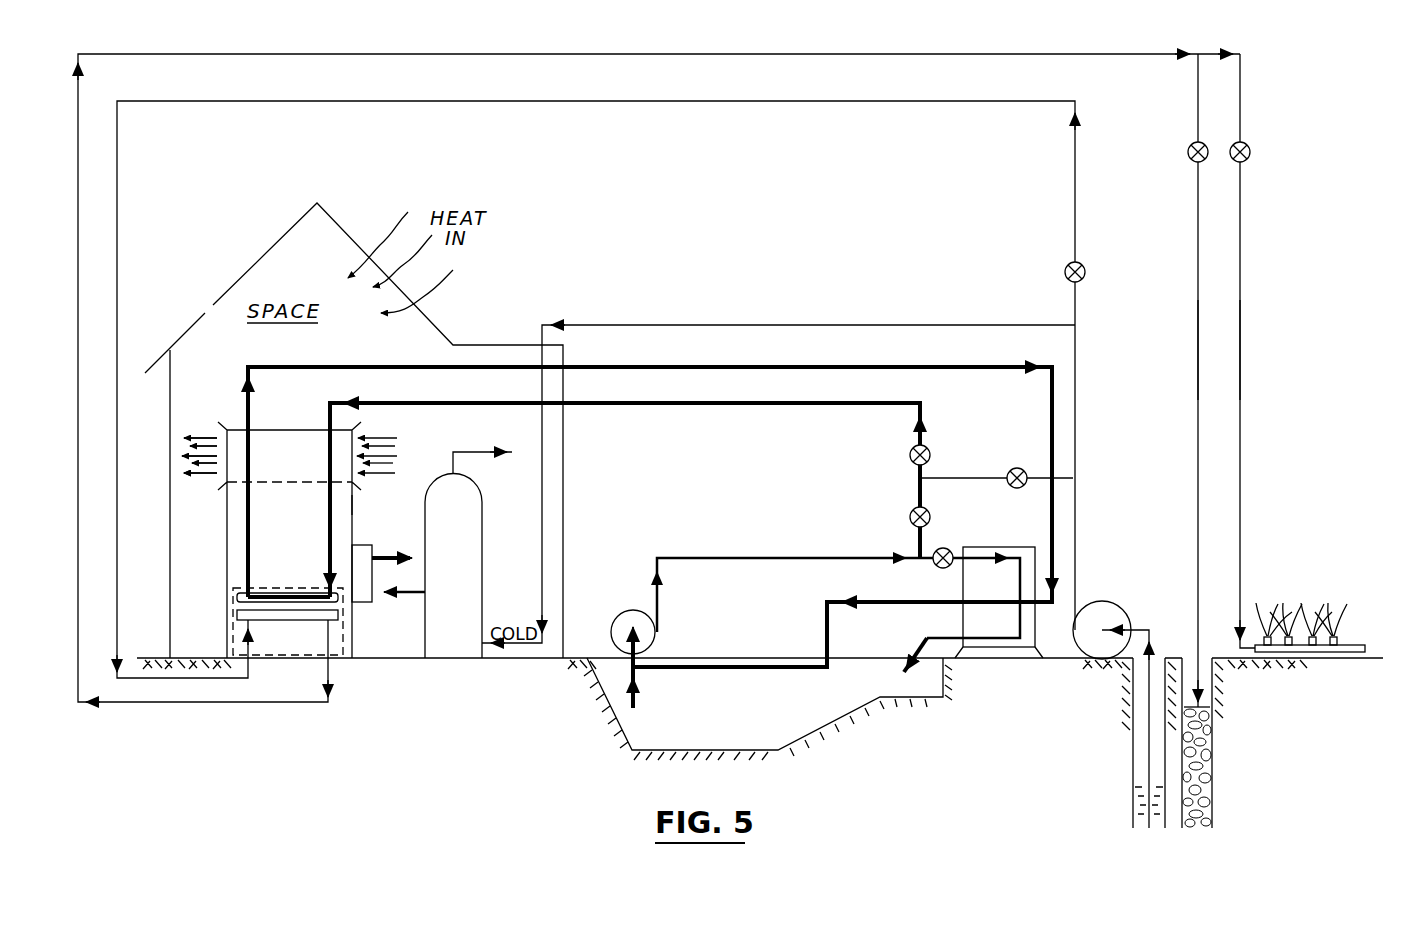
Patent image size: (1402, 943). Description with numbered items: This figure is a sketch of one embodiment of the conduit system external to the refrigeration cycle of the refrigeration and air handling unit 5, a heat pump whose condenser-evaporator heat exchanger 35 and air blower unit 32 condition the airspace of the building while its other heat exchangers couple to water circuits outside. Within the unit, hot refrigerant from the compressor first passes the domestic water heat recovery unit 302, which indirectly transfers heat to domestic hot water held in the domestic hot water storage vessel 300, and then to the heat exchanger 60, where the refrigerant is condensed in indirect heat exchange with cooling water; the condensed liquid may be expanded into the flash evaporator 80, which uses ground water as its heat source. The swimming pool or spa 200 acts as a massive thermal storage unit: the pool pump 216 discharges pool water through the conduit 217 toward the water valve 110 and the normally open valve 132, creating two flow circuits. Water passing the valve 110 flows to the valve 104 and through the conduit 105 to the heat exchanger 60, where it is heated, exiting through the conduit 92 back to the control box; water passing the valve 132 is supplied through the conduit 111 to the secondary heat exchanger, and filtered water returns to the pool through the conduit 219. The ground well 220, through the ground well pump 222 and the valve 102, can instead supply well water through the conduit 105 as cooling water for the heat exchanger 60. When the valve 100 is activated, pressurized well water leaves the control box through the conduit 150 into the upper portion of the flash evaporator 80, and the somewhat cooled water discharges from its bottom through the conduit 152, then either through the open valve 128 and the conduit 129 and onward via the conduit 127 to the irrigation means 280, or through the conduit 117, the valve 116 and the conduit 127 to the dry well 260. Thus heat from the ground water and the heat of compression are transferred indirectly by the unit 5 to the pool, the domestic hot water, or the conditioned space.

The conduit 152 is at (650, 55).
The conduit 150 is at (650, 100).
The conduit 117 is at (1198, 110).
The conduit 129 is at (1240, 110).
The valve 116 is at (1188, 152).
The valve 128 is at (1250, 152).
The valve 100 is at (1085, 272).
The conduit 127 is at (1198, 330).
The conduit 92 is at (680, 367).
The conduit 105 is at (688, 403).
The condenser-evaporator heat exchanger 35 is at (290, 456).
The air blower unit 32 is at (355, 437).
The refrigeration and air handling unit 5 is at (352, 505).
The heat exchanger 60 is at (237, 597).
The flash evaporator 80 is at (237, 616).
The domestic water heat recovery unit 302 is at (360, 602).
The domestic hot water storage vessel 300 is at (471, 555).
The pool pump 216 is at (624, 612).
The conduit 217 is at (752, 558).
The conduit 219 is at (927, 638).
The valve 132 is at (940, 570).
The conduit 111 is at (920, 543).
The water valve 110 is at (910, 517).
The water valve 104 is at (910, 453).
The water valve 102 is at (1022, 466).
The swimming pool/spa 200 is at (729, 729).
The ground well pump 222 is at (1104, 606).
The ground well 220 is at (1133, 740).
The dry well 260 is at (1212, 740).
The irrigation means 280 is at (1350, 582).